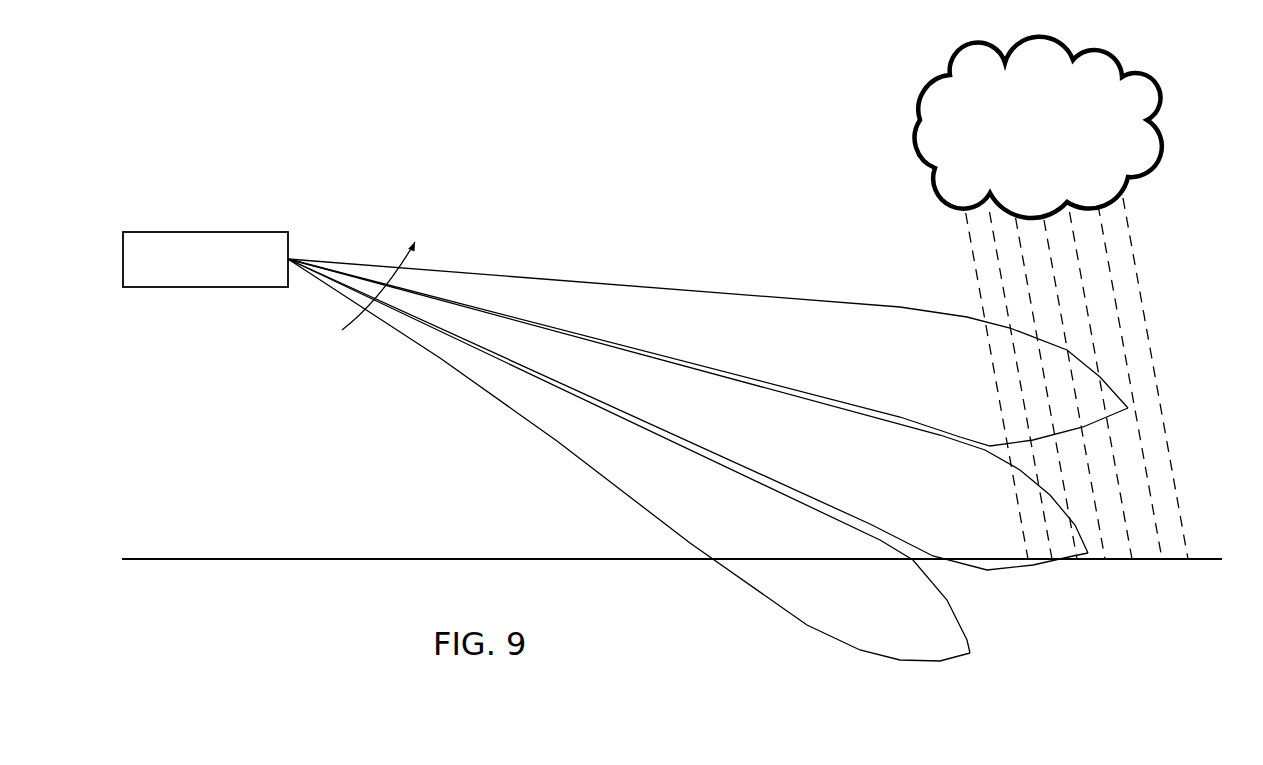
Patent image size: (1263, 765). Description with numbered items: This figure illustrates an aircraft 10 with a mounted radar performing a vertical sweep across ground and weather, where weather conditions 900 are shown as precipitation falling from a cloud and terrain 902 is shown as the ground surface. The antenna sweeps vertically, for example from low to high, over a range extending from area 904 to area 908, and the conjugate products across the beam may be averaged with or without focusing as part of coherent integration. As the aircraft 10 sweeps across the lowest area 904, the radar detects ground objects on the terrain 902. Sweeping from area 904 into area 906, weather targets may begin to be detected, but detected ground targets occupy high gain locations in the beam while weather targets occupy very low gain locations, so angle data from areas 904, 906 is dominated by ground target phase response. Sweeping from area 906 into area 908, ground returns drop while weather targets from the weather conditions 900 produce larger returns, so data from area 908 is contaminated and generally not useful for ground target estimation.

The aircraft 10 is at (140, 249).
The weather conditions 900 is at (925, 245).
The terrain 902 is at (366, 535).
The area 904 is at (765, 534).
The area 906 is at (850, 459).
The area 908 is at (878, 360).